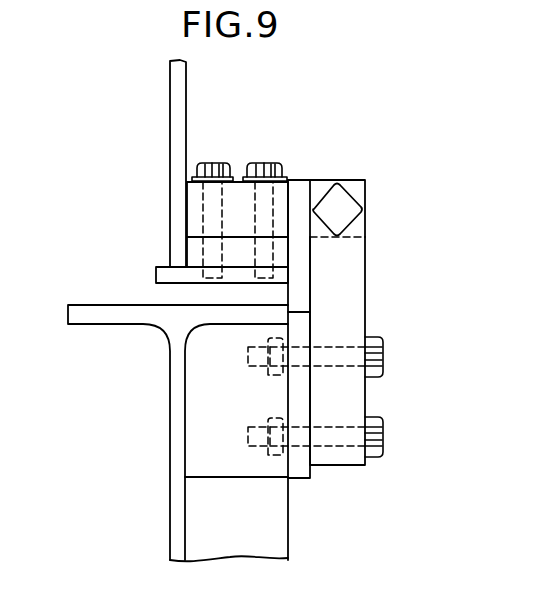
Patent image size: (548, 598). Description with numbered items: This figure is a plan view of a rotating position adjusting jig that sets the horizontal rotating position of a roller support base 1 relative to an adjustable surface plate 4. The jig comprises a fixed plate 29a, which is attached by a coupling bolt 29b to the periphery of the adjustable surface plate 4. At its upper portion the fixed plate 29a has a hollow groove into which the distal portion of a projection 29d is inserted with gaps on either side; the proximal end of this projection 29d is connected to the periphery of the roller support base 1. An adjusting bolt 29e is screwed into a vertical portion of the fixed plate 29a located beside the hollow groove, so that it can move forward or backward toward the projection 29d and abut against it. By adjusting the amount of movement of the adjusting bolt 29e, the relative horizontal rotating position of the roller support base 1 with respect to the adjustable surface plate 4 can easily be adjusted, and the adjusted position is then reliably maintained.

The roller support base 1 is at (168, 272).
The adjustable surface plate 4 is at (174, 327).
The fixed plate 29a is at (365, 308).
The coupling bolt 29b is at (383, 448).
The projection 29d is at (300, 192).
The adjusting bolt 29e is at (343, 198).